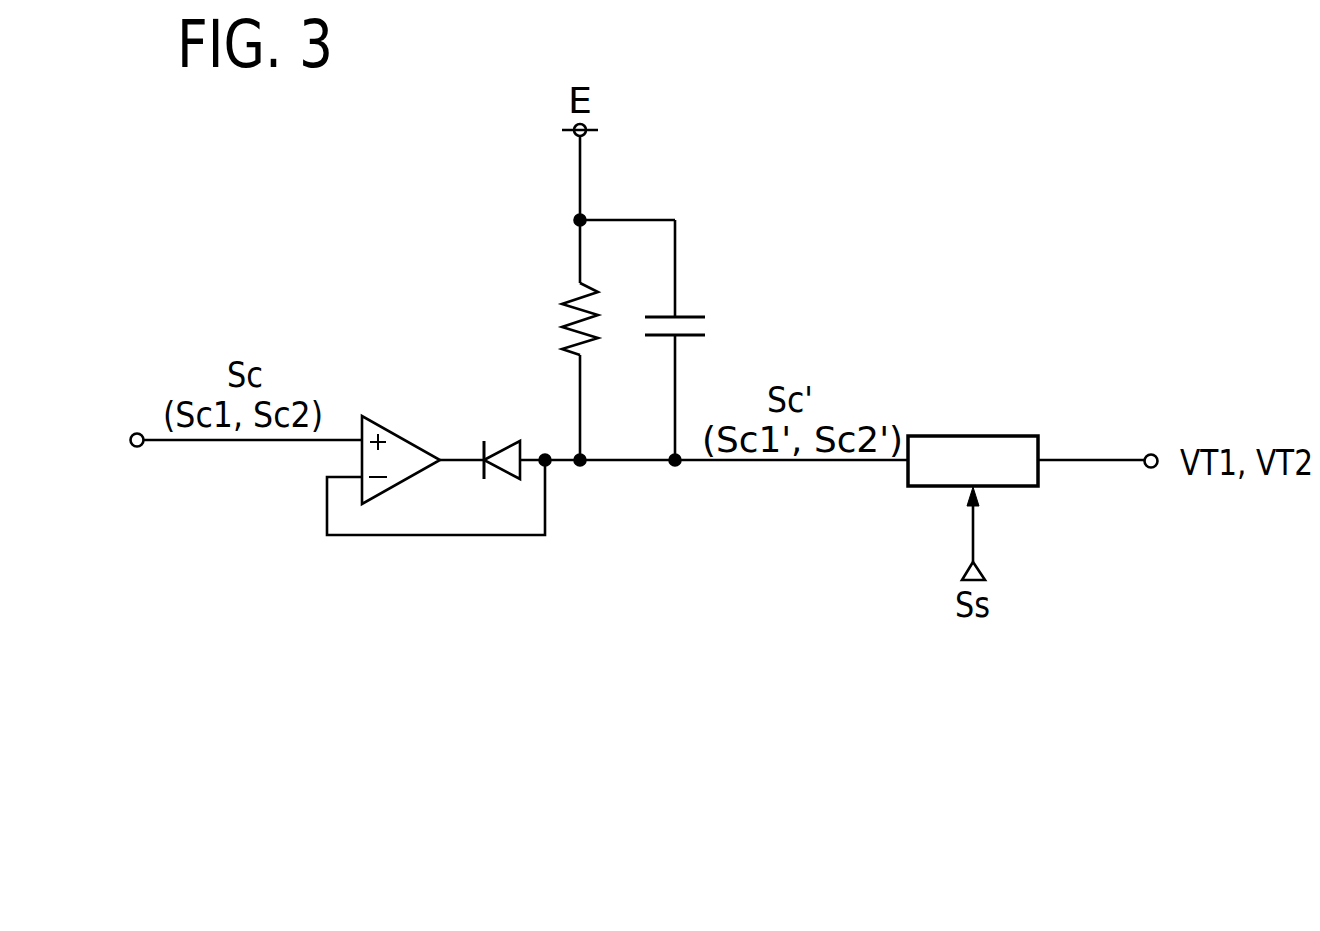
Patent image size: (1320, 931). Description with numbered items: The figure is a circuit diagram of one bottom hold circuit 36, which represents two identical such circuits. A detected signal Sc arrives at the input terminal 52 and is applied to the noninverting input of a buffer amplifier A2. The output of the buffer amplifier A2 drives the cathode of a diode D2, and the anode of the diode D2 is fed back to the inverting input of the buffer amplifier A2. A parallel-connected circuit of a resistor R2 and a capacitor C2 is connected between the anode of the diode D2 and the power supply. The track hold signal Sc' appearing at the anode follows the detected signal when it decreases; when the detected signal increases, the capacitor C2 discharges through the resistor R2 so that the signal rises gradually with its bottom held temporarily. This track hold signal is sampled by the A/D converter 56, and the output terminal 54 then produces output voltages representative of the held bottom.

The bottom hold circuit 36 is at (655, 131).
The input terminal 52 is at (137, 447).
The output terminal 54 is at (1150, 468).
The A/D converter 56 is at (1008, 436).
The resistor R2 is at (560, 317).
The capacitor C2 is at (716, 316).
The buffer amplifier A2 is at (403, 430).
The diode D2 is at (500, 438).